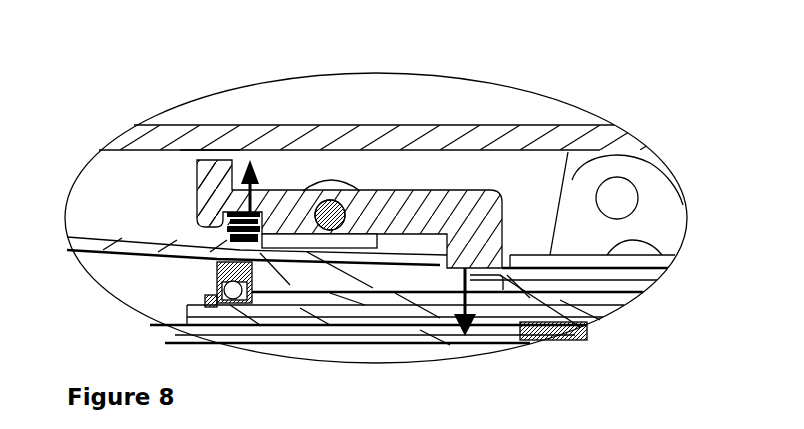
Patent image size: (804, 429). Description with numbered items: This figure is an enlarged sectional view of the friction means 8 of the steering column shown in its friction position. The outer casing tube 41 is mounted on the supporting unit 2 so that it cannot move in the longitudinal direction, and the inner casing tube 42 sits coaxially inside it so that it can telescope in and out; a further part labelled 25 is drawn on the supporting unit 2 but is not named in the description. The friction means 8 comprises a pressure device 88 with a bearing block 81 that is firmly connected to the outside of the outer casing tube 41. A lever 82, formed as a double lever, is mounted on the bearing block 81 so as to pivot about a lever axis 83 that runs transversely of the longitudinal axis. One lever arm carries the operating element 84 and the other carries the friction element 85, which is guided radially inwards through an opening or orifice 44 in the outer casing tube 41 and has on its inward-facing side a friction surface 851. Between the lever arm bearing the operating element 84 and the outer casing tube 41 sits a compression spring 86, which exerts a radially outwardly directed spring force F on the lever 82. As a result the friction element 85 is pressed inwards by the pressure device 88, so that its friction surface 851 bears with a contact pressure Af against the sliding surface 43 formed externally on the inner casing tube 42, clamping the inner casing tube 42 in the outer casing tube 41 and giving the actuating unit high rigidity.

The supporting unit 2 is at (260, 145).
The frame member wall 25 is at (213, 153).
The friction means 8 is at (272, 215).
The bearing block 81 is at (318, 243).
The lever 82 is at (430, 212).
The lever axis 83 is at (328, 198).
The operating element 84 is at (200, 197).
The friction element 85 is at (476, 238).
The friction surface 851 is at (505, 230).
The spring 86 is at (232, 240).
The pressure device 88 is at (361, 174).
The outer casing tube 41 is at (137, 248).
The inner casing tube 42 is at (390, 278).
The sliding surface 43 is at (448, 272).
The opening or orifice 44 is at (580, 320).
The spring force F is at (240, 203).
The contact pressure Af is at (444, 337).